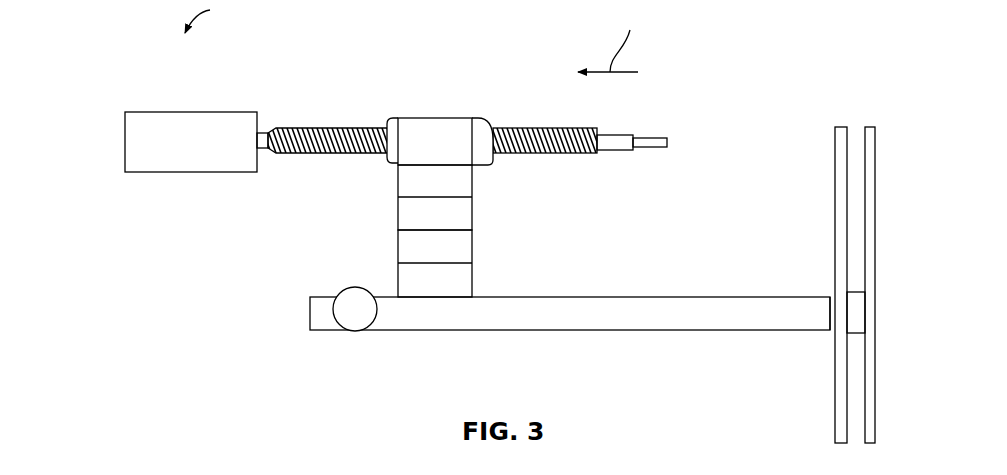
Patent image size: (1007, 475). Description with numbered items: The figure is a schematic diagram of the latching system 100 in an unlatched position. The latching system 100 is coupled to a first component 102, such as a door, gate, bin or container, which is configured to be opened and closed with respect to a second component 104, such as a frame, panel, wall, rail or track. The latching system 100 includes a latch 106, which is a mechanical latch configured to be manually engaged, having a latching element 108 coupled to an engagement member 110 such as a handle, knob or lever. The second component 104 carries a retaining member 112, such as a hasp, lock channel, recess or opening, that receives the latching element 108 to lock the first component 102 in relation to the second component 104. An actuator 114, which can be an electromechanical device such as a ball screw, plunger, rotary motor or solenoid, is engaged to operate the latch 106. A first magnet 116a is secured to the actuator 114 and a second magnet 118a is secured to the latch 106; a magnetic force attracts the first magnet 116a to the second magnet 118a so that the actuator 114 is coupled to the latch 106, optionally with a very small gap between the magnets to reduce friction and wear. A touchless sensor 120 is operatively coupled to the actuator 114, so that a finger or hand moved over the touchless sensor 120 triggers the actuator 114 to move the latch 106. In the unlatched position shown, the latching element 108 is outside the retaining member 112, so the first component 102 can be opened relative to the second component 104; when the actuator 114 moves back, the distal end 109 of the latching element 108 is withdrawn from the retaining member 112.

The latching system 100 is at (100, 145).
The first component 102 is at (190, 297).
The second component 104 is at (878, 264).
The latch 106 is at (493, 334).
The latching element 108 is at (668, 297).
The distal end 109 is at (815, 332).
The engagement member 110 is at (357, 320).
The retaining member 112 is at (860, 314).
The actuator 114 is at (355, 128).
The first magnet 116a is at (482, 165).
The second magnet 118a is at (482, 230).
The touchless sensor 120 is at (190, 112).